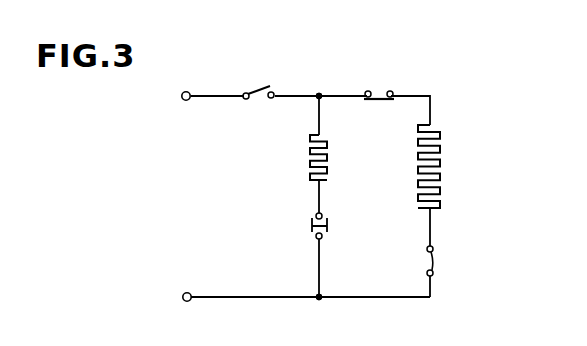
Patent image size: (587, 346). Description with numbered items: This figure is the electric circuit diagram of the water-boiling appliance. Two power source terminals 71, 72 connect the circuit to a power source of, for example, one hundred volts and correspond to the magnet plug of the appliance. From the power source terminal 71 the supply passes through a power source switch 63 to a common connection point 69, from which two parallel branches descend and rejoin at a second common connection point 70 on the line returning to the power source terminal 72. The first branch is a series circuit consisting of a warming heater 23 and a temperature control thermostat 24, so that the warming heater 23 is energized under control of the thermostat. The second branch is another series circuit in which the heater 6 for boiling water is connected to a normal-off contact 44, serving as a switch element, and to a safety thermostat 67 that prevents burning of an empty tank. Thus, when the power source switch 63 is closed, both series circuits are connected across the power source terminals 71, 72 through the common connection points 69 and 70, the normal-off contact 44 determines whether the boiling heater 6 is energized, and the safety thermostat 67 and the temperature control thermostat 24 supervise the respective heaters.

The power source terminal 71 is at (181, 96).
The power source terminal 72 is at (182, 296).
The power source switch 63 is at (250, 88).
The common connection point 69 is at (320, 93).
The normal-off contact 44 is at (387, 91).
The heater for boiling water 6 is at (442, 170).
The safety thermostat 67 is at (440, 262).
The warming heater 23 is at (308, 162).
The temperature control thermostat 24 is at (308, 228).
The common connection point 70 is at (323, 300).